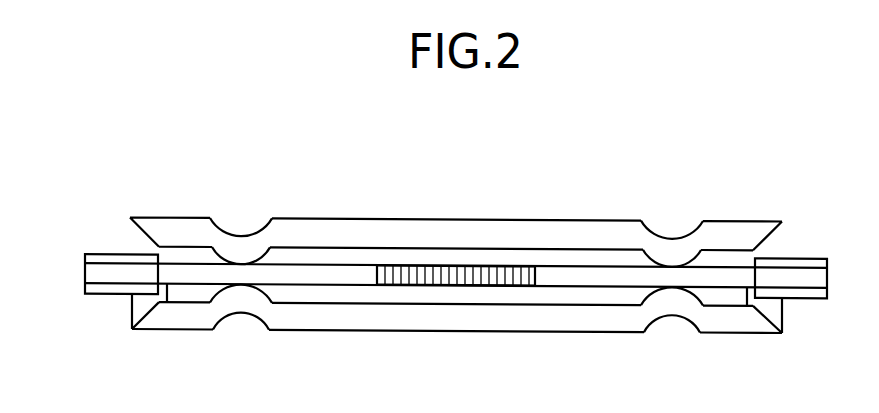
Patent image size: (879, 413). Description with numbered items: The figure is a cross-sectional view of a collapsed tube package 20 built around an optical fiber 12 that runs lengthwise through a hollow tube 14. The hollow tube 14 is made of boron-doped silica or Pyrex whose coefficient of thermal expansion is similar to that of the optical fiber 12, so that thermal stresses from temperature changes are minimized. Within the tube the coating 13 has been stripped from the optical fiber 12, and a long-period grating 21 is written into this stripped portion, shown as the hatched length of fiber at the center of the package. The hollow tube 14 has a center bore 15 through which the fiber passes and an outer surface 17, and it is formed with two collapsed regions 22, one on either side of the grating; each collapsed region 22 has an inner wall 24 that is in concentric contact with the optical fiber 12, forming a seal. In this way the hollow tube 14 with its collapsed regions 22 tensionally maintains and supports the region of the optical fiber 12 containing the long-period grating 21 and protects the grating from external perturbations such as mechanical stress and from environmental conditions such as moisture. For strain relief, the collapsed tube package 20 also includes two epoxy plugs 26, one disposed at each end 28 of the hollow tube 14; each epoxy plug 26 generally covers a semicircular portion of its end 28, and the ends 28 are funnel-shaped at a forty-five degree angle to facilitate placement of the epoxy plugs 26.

The optical fiber 12 is at (293, 286).
The coating 13 is at (797, 256).
The hollow tube 14 is at (373, 220).
The center bore 15 is at (408, 290).
The outer surface 17 is at (140, 333).
The collapsed tube package 20 is at (602, 130).
The long-period grating 21 is at (467, 266).
The collapsed regions 22 is at (238, 238).
The inner wall 24 is at (240, 286).
The epoxy plugs 26 is at (131, 312).
The ends 28 is at (268, 340).